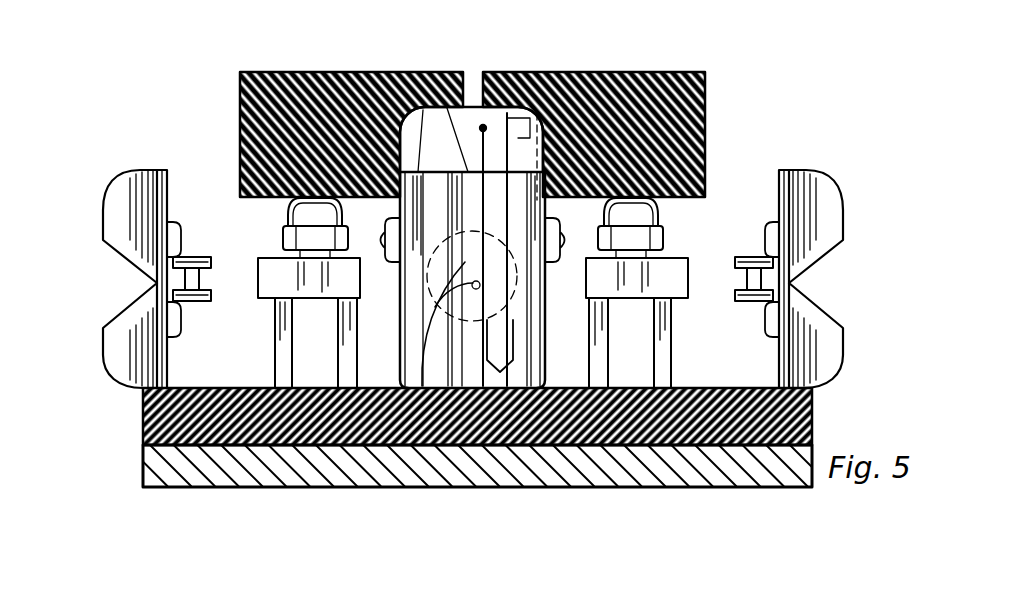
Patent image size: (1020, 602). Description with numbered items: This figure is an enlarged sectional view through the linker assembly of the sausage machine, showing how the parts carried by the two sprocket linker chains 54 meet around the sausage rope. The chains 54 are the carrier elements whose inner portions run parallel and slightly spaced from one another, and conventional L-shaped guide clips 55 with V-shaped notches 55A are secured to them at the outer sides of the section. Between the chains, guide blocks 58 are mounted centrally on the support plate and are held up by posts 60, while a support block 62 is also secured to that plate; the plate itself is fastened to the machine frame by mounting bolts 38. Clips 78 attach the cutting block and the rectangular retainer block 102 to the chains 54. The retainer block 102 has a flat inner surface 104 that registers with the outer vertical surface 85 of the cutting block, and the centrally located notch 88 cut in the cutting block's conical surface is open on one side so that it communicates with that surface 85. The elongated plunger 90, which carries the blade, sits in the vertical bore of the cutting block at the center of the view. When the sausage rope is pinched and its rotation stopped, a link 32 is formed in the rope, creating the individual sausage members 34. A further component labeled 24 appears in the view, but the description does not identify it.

The clamping fixture assembly 24 is at (722, 116).
The link 32 is at (420, 295).
The sausage members 34 is at (400, 335).
The mounting bolts 38 is at (293, 482).
The sprocket linker chains 54 is at (196, 256).
The L-shaped guide clips 55 is at (133, 175).
The V-shaped notches 55A is at (155, 272).
The guide blocks 58 is at (290, 202).
The posts 60 is at (297, 334).
The support block 62 is at (235, 447).
The clips 78 is at (545, 400).
The outer vertical surface 85 is at (447, 290).
The notch 88 is at (475, 95).
The elongated plunger 90 is at (530, 105).
The retainer block 102 is at (410, 105).
The flat inner surface 104 is at (418, 72).